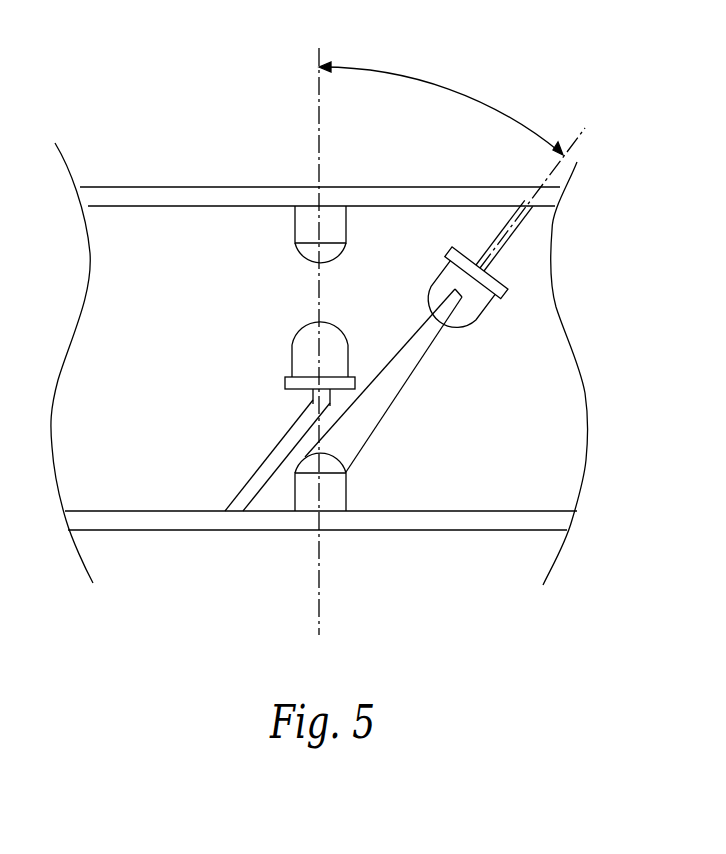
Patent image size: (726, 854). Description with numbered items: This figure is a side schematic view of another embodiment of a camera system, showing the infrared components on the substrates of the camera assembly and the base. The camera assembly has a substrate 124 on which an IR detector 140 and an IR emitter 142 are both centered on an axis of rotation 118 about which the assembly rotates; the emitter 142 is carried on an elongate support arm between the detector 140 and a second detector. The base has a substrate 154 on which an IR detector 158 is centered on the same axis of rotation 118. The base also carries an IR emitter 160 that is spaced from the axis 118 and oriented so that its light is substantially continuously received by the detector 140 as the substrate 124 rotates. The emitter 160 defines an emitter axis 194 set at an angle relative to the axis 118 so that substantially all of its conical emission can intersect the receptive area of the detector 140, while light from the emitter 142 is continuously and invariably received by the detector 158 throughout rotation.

The axis of rotation 118 is at (318, 151).
The emitter axis 194 is at (588, 124).
The substrate 154 is at (167, 192).
The substrate 124 is at (163, 524).
The IR detector 158 is at (297, 234).
The IR emitter 142 is at (297, 343).
The IR detector 140 is at (337, 495).
The IR emitter 160 is at (472, 294).